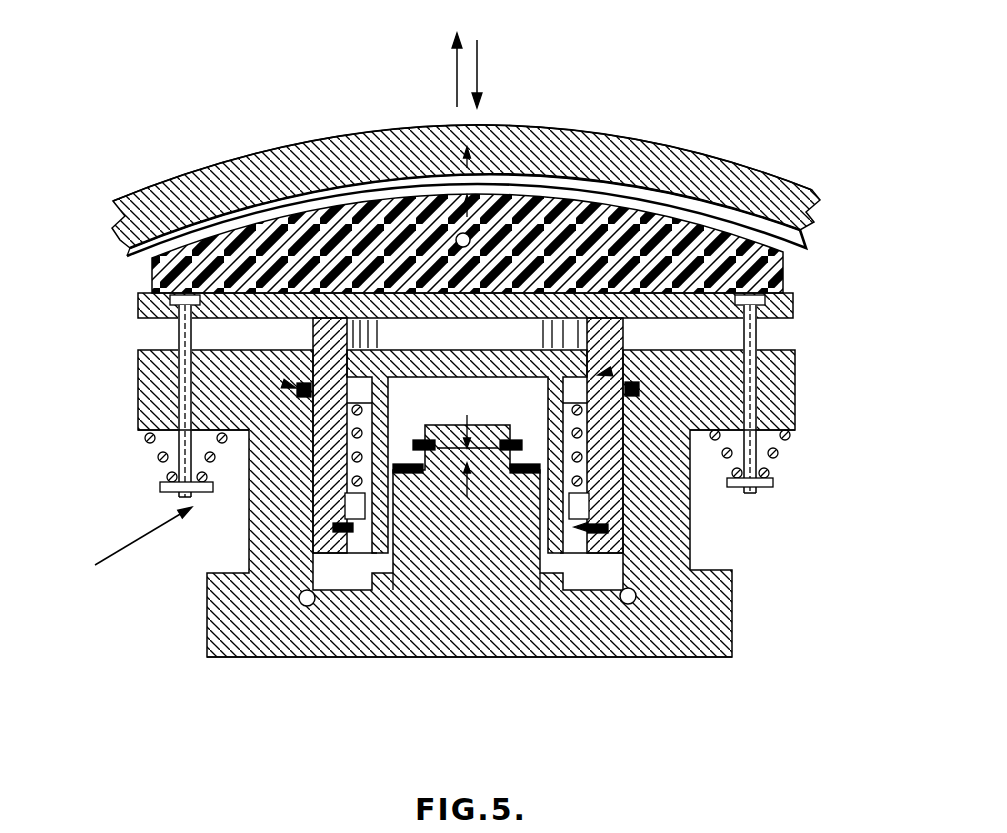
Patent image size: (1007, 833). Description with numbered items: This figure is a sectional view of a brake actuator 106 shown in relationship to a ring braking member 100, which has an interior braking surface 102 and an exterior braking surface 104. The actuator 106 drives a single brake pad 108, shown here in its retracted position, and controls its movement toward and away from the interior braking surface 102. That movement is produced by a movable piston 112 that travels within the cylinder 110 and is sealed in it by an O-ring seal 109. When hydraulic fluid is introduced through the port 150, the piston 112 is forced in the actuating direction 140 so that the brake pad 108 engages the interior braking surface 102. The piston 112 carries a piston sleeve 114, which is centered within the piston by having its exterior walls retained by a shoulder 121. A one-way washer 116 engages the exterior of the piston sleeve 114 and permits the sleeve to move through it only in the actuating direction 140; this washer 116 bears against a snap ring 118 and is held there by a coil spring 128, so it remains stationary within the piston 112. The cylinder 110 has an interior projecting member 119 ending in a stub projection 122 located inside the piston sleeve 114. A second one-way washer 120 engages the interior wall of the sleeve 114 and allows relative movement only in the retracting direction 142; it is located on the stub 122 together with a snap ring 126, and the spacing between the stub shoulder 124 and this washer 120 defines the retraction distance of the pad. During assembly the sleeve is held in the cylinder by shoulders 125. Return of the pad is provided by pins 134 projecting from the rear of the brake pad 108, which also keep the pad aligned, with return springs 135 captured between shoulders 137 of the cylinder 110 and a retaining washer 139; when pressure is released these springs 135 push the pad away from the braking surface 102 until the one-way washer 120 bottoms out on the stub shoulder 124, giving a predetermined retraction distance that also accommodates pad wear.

The ring braking member 100 is at (583, 147).
The interior braking surface 102 is at (800, 258).
The exterior braking surface 104 is at (714, 154).
The brake actuator 106 is at (402, 439).
The brake pad 108 is at (514, 182).
The O-ring seal 109 is at (294, 387).
The cylinder 110 is at (362, 623).
The piston 112 is at (600, 374).
The piston sleeve 114 is at (560, 450).
The one-way washer 116 is at (585, 574).
The snap ring 118 is at (578, 527).
The interior projecting member 119 is at (476, 596).
The one-way washer 120 is at (393, 465).
The shoulder 121 is at (356, 406).
The stub projection 122 is at (488, 427).
The stub shoulder 124 is at (520, 470).
The shoulders 125 is at (385, 592).
The snap ring 126 is at (416, 440).
The coil spring 128 is at (356, 487).
The pins 134 is at (146, 417).
The return springs 135 is at (157, 453).
The shoulders 137 is at (797, 377).
The retaining washer 139 is at (160, 487).
The actuating direction 140 is at (455, 81).
The retracting direction 142 is at (480, 57).
The port 150 is at (629, 600).